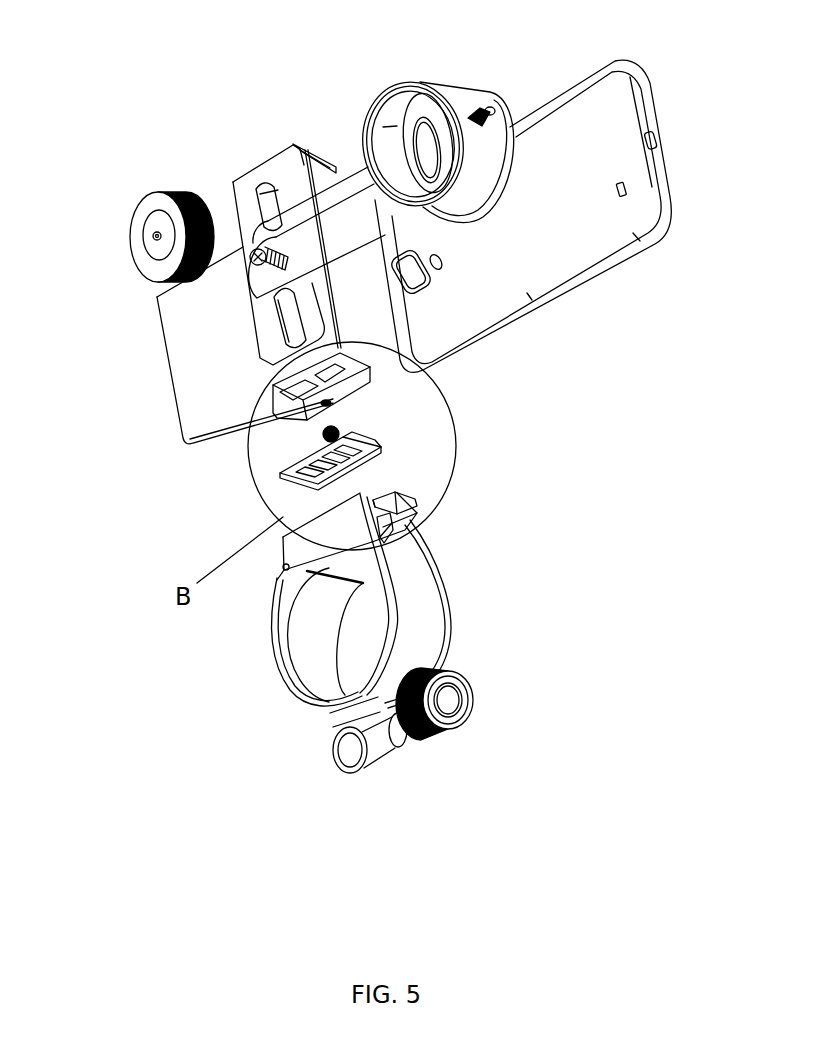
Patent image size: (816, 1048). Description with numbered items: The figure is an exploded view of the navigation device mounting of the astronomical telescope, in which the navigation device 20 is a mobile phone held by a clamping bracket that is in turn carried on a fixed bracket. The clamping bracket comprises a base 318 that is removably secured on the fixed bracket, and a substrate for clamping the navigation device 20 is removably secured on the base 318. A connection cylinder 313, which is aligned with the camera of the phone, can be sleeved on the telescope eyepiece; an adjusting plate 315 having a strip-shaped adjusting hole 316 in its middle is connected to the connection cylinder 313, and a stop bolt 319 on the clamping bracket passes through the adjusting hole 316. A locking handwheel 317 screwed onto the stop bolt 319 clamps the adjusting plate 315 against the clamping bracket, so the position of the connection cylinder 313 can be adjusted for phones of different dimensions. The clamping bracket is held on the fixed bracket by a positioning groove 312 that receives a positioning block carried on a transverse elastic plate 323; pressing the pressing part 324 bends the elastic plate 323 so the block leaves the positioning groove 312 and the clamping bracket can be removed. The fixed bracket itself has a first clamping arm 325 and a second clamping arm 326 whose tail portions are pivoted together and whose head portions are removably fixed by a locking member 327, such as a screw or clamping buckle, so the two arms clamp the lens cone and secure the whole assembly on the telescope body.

The navigation device 20 is at (550, 233).
The positioning groove 312 is at (243, 516).
The connection cylinder 313 is at (403, 113).
The adjusting plate 315 is at (302, 220).
The adjusting hole 316 is at (368, 213).
The locking handwheel 317 is at (152, 207).
The base 318 is at (360, 493).
The stop bolt 319 is at (257, 252).
The elastic plate 323 is at (380, 517).
The pressing part 324 is at (400, 507).
The first clamping arm 325 is at (305, 652).
The second clamping arm 326 is at (430, 617).
The locking member 327 is at (407, 730).